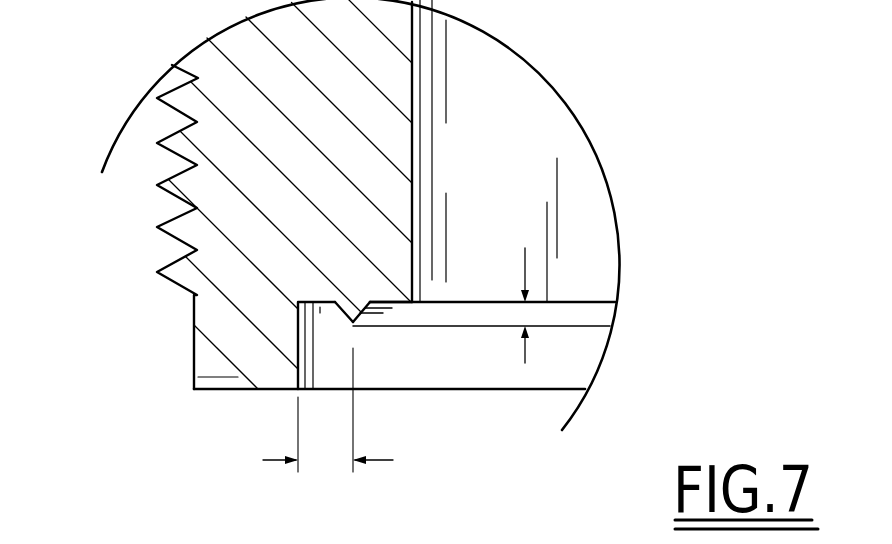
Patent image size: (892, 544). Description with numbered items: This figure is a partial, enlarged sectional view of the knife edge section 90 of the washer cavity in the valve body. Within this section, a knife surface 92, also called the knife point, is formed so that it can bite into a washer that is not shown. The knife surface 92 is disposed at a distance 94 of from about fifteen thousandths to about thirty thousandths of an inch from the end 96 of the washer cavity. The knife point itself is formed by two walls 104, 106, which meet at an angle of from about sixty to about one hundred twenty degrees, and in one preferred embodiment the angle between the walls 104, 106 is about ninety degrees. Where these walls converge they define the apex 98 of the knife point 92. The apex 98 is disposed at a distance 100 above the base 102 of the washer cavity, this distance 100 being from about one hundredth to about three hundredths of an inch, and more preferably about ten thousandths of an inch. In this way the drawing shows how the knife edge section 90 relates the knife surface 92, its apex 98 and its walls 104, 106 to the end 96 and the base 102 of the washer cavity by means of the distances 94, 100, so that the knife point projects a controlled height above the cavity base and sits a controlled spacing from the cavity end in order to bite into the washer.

The knife edge section 90 is at (146, 340).
The knife surface 92 is at (361, 324).
The distance 94 is at (328, 413).
The end of the washer cavity 96 is at (304, 361).
The apex 98 is at (354, 324).
The distance 100 is at (526, 308).
The base of the washer cavity 102 is at (597, 328).
The wall 104 is at (381, 254).
The wall 106 is at (343, 304).